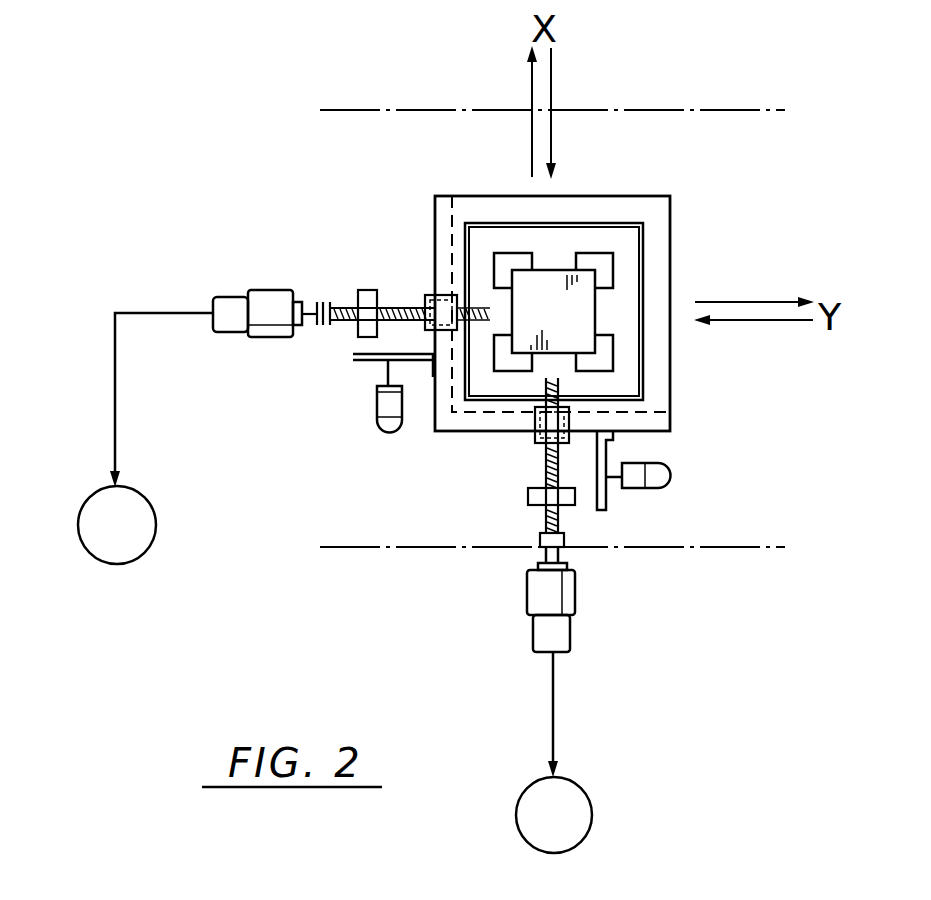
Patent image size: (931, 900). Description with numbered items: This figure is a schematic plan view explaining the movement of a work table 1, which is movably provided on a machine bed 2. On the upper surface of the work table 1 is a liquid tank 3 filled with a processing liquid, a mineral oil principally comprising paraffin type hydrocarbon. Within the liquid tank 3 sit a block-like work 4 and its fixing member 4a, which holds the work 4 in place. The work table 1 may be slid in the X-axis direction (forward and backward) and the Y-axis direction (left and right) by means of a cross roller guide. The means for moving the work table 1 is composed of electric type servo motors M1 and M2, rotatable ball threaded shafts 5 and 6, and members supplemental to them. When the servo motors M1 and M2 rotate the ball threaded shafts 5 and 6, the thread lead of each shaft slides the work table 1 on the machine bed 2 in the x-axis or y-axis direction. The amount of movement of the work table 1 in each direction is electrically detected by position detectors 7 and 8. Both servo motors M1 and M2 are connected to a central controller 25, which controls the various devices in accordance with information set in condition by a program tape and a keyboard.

The work table 1 is at (641, 200).
The machine bed 2 is at (414, 124).
The liquid tank 3 is at (621, 258).
The work 4 is at (578, 317).
The fixing member 4a is at (510, 258).
The ball threaded shaft 5 is at (545, 466).
The ball threaded shaft 6 is at (408, 308).
The position detector 7 is at (650, 460).
The position detector 8 is at (388, 408).
The servo motor M1 is at (573, 600).
The servo motor M2 is at (270, 300).
The central controller 25 is at (335, 583).